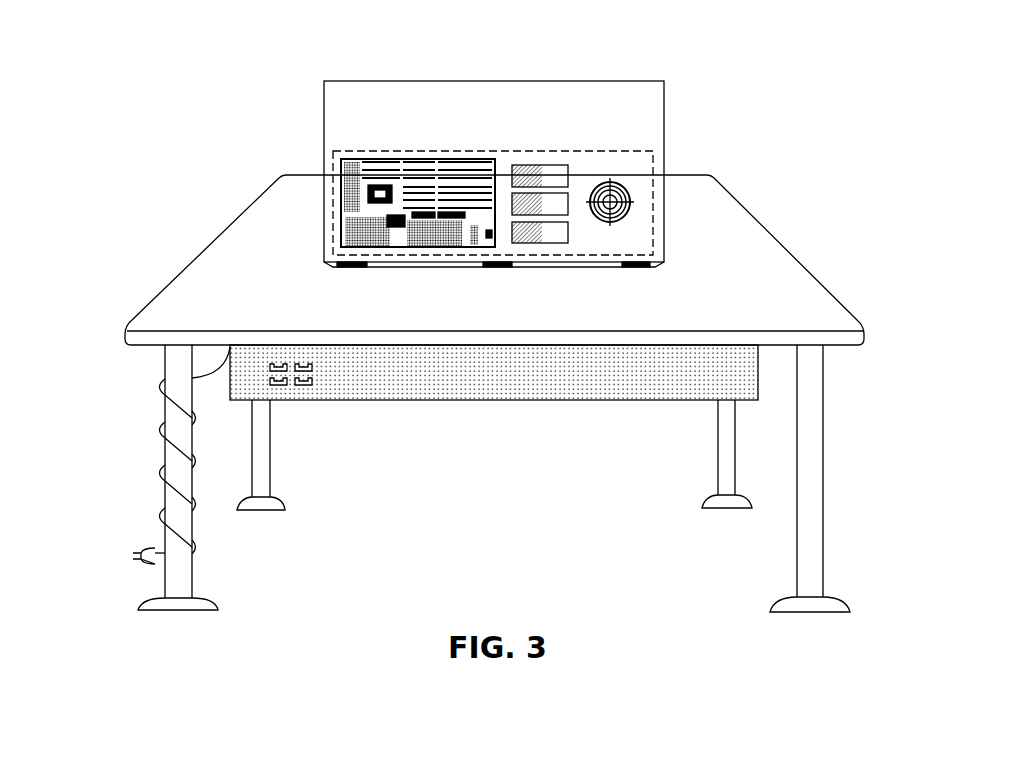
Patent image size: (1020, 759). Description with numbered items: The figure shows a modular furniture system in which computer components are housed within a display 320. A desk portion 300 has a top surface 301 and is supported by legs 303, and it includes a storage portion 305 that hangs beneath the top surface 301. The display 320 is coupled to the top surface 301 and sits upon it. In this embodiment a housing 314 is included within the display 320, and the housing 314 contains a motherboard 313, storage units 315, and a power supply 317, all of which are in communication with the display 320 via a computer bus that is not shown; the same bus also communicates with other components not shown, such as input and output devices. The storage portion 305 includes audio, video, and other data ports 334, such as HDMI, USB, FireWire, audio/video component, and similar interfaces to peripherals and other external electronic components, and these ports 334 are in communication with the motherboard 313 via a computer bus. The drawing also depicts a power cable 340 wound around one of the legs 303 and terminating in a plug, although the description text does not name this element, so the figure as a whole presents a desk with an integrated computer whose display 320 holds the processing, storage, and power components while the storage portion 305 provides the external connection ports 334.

The desk portion 300 is at (230, 225).
The top surface 301 is at (236, 296).
The legs 303 is at (160, 598).
The storage portion 305 is at (758, 370).
The motherboard 313 is at (420, 160).
The housing 314 is at (345, 152).
The storage units 315 is at (548, 162).
The power supply 317 is at (623, 188).
The display 320 is at (324, 133).
The data ports 334 is at (307, 386).
The power cable with plug 340 is at (141, 549).